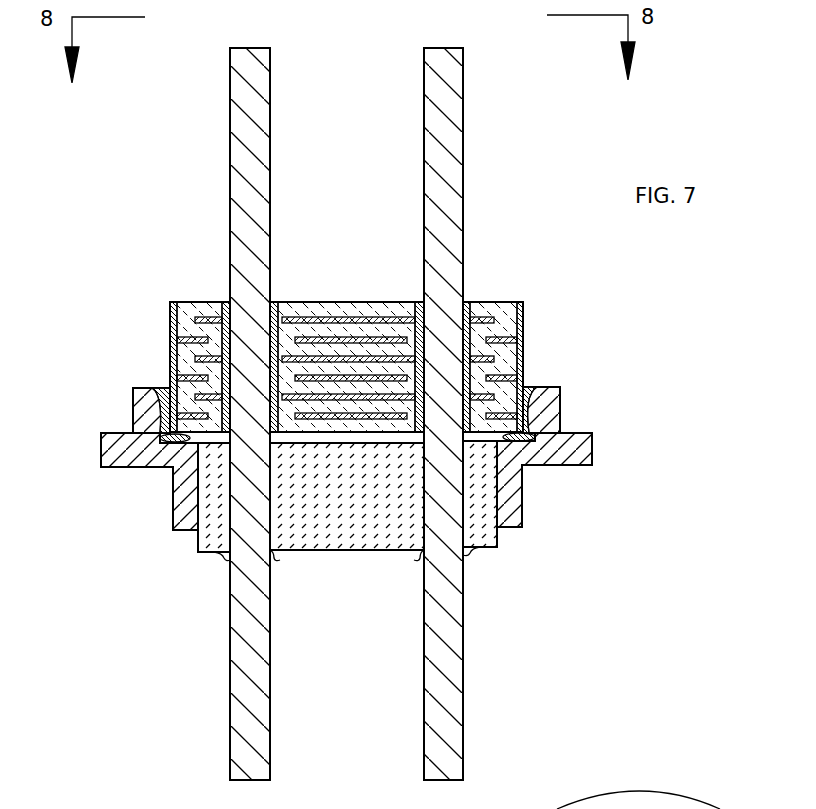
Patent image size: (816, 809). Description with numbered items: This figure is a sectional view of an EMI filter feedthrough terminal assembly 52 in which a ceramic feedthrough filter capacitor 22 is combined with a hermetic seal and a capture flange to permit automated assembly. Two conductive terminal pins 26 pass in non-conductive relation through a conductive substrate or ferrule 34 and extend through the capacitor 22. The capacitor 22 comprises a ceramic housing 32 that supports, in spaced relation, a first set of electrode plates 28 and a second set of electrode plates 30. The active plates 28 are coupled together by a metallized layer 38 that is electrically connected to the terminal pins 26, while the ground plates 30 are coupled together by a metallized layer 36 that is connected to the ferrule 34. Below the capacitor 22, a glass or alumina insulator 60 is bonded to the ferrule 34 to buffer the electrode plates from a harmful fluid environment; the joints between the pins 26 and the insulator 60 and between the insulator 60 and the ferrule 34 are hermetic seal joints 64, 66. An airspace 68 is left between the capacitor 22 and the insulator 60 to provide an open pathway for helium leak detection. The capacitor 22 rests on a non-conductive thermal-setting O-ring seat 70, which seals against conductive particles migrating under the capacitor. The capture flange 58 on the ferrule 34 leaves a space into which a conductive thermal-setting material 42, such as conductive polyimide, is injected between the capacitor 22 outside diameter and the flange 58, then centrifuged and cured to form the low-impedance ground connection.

The feedthrough filter capacitor 22 is at (530, 344).
The terminal pin 26 is at (232, 680).
The first set of electrode plates 28 is at (310, 318).
The second set of electrode plates 30 is at (188, 335).
The ceramic housing 32 is at (522, 306).
The ferrule 34 is at (592, 455).
The metallized layer 36 is at (170, 378).
The metallized layer 38 is at (275, 302).
The conductive thermal-setting material 42 is at (535, 390).
The EMI filter feedthrough terminal assembly 52 is at (321, 319).
The capture flange 58 is at (135, 405).
The insulator 60 is at (350, 552).
The hermetic seal joint 64 is at (228, 556).
The hermetic seal joint 66 is at (196, 532).
The airspace 68 is at (200, 470).
The O-ring seat 70 is at (163, 440).